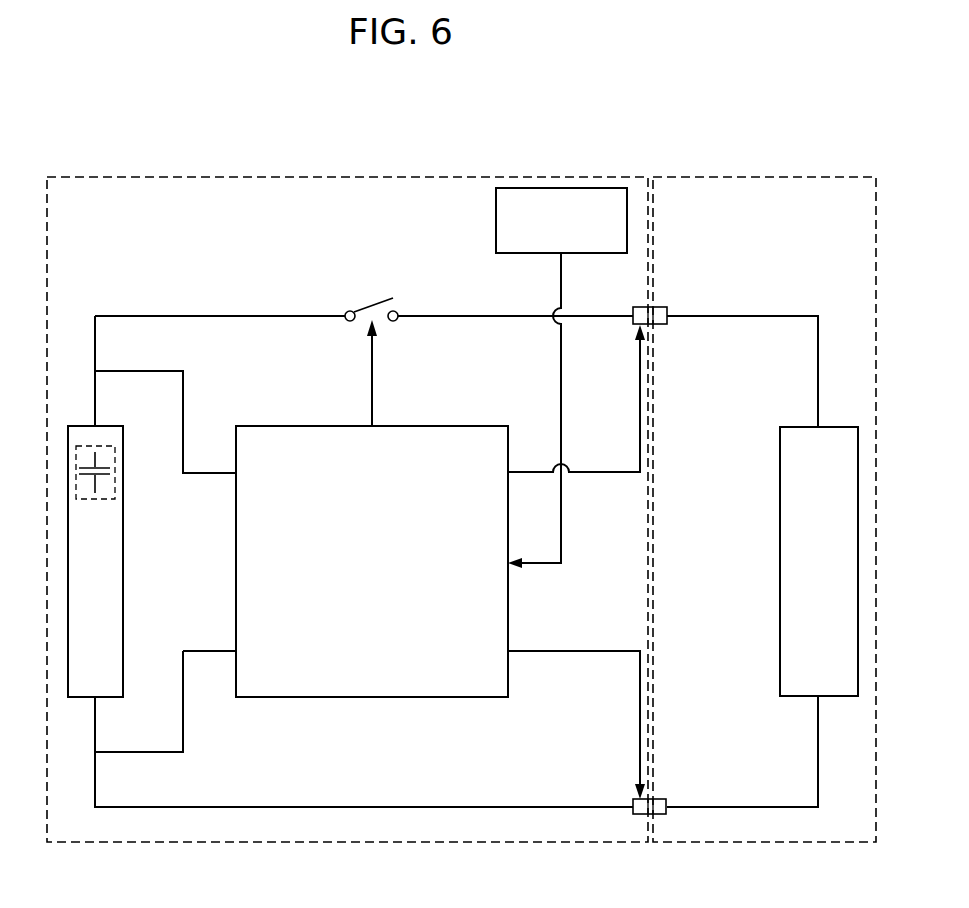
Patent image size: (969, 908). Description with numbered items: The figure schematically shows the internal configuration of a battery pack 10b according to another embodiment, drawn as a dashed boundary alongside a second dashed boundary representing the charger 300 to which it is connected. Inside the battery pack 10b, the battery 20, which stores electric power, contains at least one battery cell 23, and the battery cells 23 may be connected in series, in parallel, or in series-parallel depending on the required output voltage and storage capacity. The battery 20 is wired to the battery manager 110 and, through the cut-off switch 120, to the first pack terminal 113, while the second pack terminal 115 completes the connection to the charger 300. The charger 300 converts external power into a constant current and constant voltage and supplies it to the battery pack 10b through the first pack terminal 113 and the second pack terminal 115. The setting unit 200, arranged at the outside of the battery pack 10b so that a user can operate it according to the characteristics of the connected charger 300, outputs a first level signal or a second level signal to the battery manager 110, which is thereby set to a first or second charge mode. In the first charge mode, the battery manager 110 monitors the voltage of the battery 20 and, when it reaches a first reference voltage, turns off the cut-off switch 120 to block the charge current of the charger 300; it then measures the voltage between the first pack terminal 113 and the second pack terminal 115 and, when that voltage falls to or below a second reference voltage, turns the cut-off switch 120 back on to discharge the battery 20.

The battery pack 10b is at (512, 161).
The charger 300 is at (842, 161).
The setting unit 200 is at (496, 218).
The cut-off switch 120 is at (372, 299).
The battery manager 110 is at (471, 426).
The first pack terminal 113 is at (641, 307).
The second pack terminal 115 is at (641, 816).
The battery 20 is at (99, 428).
The battery cell 23 is at (115, 489).